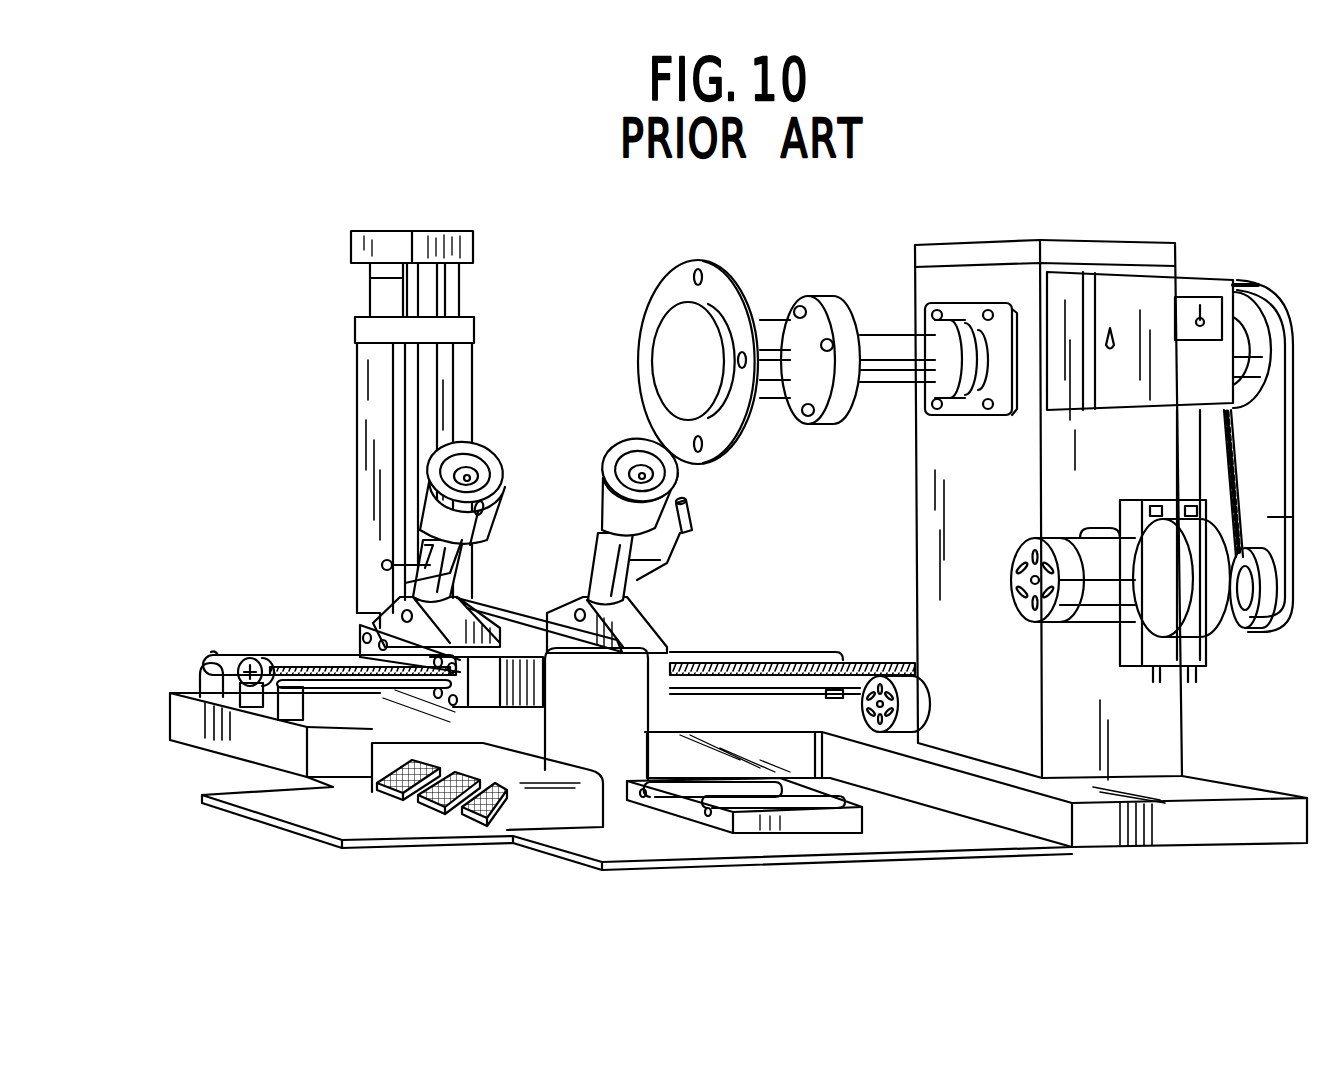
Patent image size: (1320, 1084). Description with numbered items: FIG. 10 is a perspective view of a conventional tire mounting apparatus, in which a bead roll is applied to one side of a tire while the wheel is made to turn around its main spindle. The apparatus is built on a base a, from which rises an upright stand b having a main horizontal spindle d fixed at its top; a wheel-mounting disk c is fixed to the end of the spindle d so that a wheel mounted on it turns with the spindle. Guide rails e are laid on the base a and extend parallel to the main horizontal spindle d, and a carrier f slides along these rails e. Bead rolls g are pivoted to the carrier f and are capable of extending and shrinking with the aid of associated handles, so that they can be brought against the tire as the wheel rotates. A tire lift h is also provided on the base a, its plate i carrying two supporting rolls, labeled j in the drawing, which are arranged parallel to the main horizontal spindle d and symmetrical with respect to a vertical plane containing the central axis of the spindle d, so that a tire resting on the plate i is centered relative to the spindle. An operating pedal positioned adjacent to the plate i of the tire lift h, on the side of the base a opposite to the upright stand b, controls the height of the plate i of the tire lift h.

The base a is at (1188, 830).
The upright stand b is at (1170, 726).
The wheel-mounting disk c is at (653, 305).
The main horizontal spindle d is at (888, 340).
The guide rails e is at (274, 660).
The carrier f is at (660, 605).
The bead rolls g is at (493, 462).
The tire lift h is at (347, 420).
The plate i is at (680, 812).
The rollers in tray j is at (812, 800).